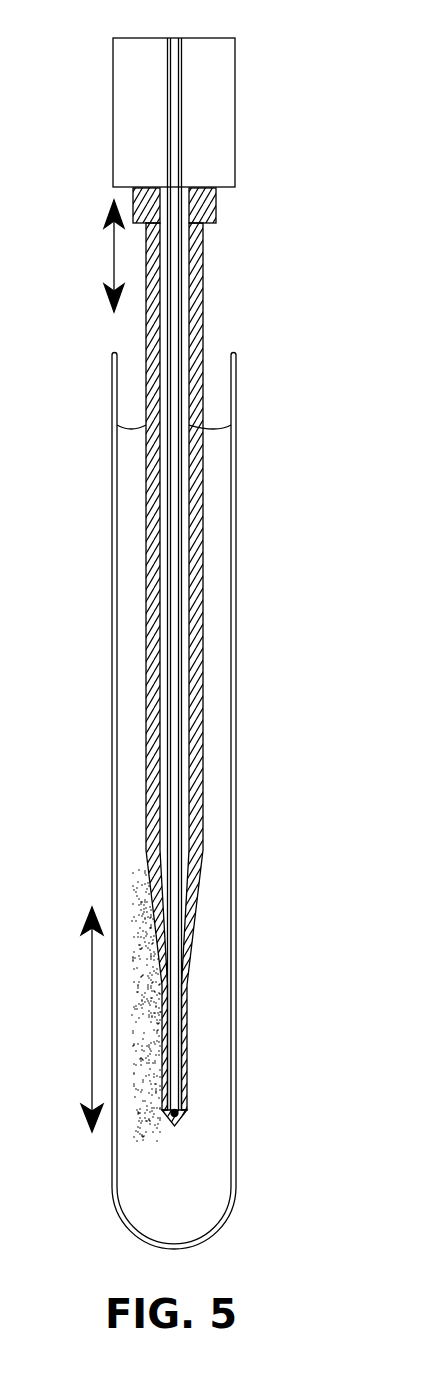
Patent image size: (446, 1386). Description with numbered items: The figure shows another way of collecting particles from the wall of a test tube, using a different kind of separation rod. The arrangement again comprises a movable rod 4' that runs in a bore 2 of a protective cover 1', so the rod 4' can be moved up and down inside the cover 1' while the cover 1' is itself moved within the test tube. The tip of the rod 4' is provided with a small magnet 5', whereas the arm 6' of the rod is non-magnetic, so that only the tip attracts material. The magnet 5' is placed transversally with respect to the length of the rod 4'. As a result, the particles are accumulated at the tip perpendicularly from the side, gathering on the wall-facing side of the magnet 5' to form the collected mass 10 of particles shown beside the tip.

The protective cover 1' is at (225, 649).
The movable rod 4' is at (234, 574).
The bore 2 is at (189, 558).
The arm 6' is at (120, 481).
The small magnet 5' is at (266, 1118).
The solid particles 10 is at (147, 1025).